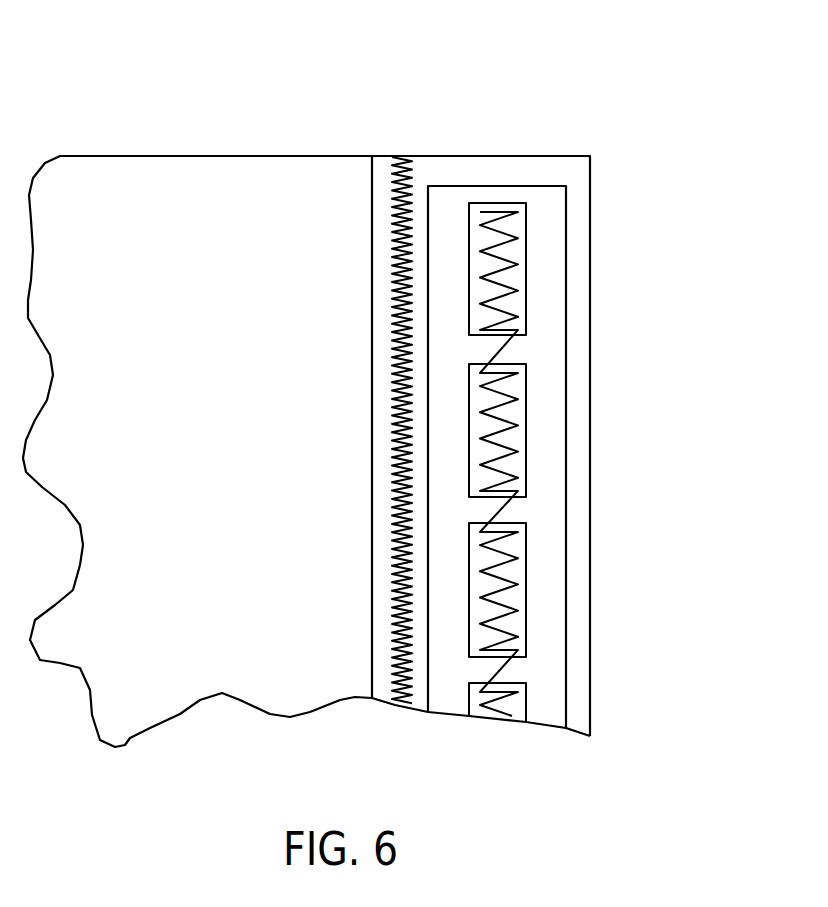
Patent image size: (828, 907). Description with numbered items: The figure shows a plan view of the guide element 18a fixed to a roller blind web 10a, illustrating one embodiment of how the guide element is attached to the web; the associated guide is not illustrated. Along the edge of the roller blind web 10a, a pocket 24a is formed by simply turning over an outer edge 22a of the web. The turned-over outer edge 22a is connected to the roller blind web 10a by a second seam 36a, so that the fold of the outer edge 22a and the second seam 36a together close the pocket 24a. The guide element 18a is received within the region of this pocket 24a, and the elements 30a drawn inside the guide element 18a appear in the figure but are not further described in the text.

The workpiece / base member 10a is at (187, 156).
The side wall 22a is at (372, 208).
The serrated / zigzag engagement surface 36a is at (393, 308).
The outer housing frame 24a is at (596, 140).
The inner carrier plate 18a is at (567, 242).
The spring elements 30a is at (499, 211).